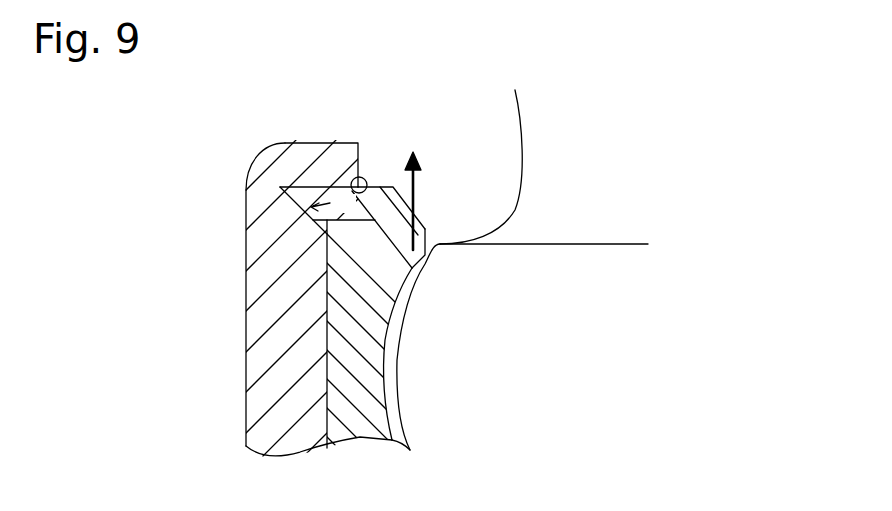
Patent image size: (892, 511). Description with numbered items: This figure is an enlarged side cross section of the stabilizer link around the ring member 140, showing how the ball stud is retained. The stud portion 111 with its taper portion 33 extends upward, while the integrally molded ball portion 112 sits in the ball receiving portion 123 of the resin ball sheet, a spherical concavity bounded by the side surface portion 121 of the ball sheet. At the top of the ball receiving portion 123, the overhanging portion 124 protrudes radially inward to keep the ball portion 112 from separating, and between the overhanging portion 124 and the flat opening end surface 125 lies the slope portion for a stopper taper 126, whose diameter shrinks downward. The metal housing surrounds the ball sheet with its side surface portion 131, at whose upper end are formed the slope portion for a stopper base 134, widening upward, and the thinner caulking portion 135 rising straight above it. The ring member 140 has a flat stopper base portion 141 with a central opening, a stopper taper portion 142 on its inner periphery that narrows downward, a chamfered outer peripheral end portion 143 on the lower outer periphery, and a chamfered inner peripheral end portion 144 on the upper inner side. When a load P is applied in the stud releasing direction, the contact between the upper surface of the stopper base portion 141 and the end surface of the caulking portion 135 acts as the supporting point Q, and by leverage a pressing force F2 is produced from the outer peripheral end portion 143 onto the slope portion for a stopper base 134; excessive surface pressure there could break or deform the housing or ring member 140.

The stud portion 111 is at (567, 219).
The taper portion 33 is at (582, 202).
The ball portion 112 is at (602, 348).
The side surface portion 121 is at (310, 271).
The side surface portion 131 is at (263, 360).
The slope portion for a stopper base 134 is at (290, 187).
The caulking portion 135 is at (345, 163).
The stopper taper portion 142 is at (322, 187).
The outer peripheral end portion 143 is at (306, 211).
The opening end surface 125 is at (335, 232).
The slope portion for a stopper taper 126 is at (365, 240).
The overhanging portion 124 is at (378, 281).
The ring member 140 is at (423, 199).
The stopper base portion 141 is at (413, 208).
The inner peripheral end portion 144 is at (427, 240).
The ball receiving portion 123 is at (400, 376).
The supporting point Q is at (361, 177).
The load P is at (419, 195).
The pressing force F2 is at (333, 204).